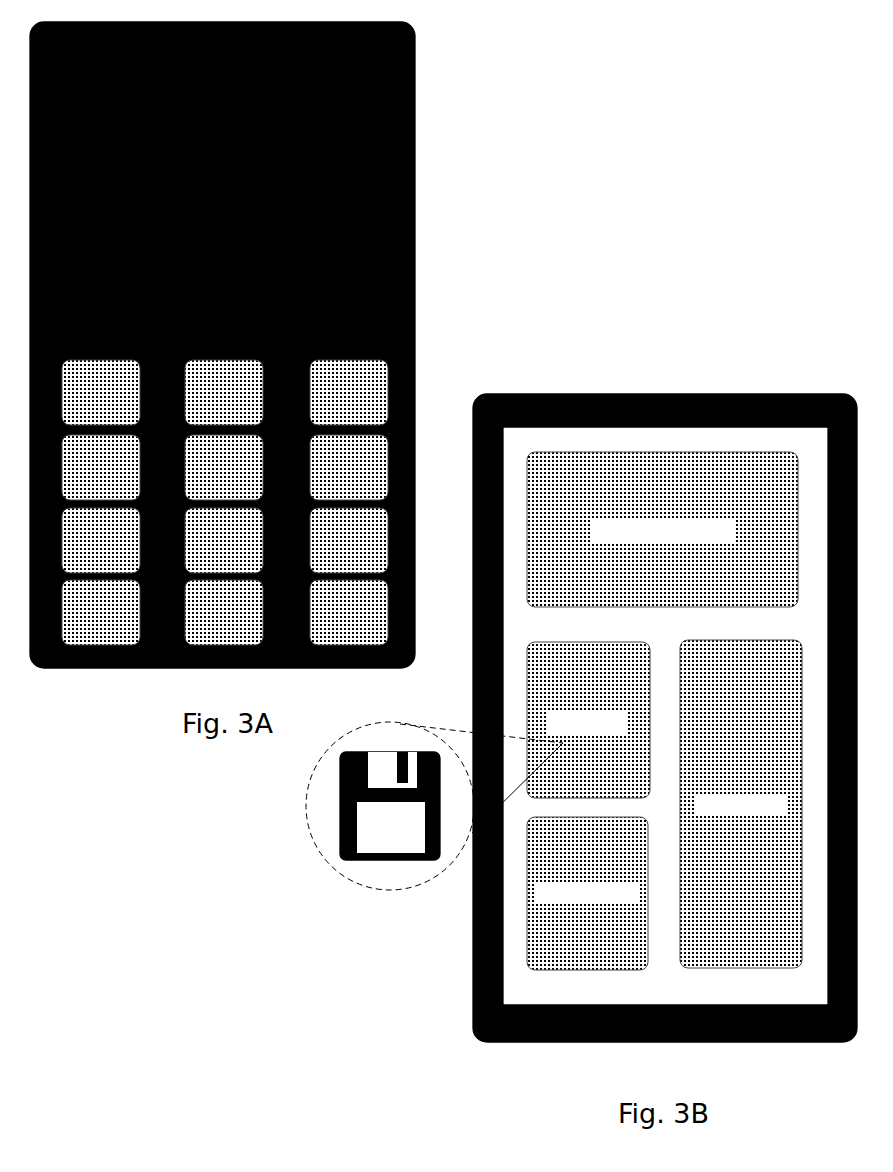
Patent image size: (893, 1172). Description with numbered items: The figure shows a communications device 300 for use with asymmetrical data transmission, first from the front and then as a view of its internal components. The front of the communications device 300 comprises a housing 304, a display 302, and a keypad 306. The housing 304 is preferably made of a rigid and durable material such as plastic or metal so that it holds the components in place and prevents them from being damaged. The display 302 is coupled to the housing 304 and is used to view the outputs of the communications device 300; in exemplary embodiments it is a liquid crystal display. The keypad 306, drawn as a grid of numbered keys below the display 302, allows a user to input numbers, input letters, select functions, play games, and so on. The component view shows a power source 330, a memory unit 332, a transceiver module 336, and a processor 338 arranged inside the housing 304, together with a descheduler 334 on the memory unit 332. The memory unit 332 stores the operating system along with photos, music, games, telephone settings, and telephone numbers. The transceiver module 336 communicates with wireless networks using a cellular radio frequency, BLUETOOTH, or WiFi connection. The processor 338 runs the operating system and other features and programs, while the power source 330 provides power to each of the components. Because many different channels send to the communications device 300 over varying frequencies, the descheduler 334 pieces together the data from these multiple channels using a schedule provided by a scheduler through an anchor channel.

In FIG. 3A, the communications device 300 is at (283, 343).
In FIG. 3B, the communications device 300 is at (665, 672).
In FIG. 3A, the display 302 is at (289, 193).
In FIG. 3A, the housing 304 is at (316, 435).
In FIG. 3A, the keypad 306 is at (160, 627).
In FIG. 3B, the power source 330 is at (617, 479).
In FIG. 3B, the memory unit 332 is at (537, 688).
In FIG. 3B, the descheduler 334 is at (412, 834).
In FIG. 3B, the transceiver module 336 is at (525, 900).
In FIG. 3B, the processor 338 is at (772, 865).